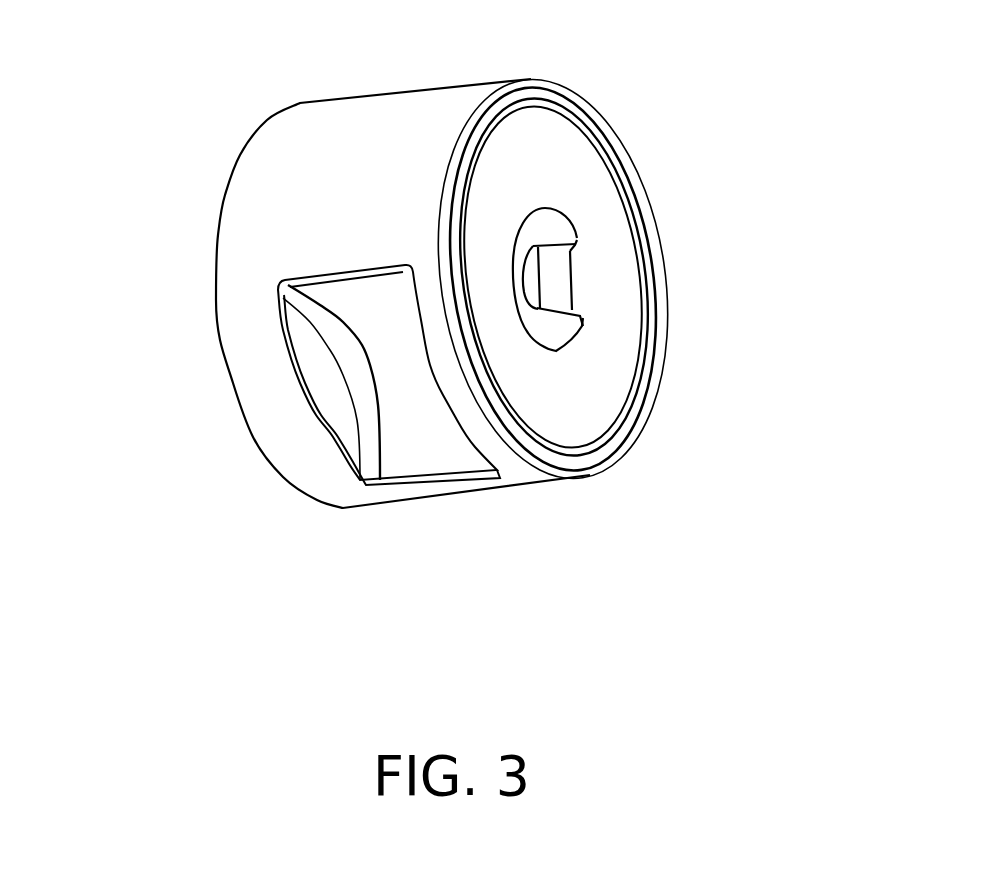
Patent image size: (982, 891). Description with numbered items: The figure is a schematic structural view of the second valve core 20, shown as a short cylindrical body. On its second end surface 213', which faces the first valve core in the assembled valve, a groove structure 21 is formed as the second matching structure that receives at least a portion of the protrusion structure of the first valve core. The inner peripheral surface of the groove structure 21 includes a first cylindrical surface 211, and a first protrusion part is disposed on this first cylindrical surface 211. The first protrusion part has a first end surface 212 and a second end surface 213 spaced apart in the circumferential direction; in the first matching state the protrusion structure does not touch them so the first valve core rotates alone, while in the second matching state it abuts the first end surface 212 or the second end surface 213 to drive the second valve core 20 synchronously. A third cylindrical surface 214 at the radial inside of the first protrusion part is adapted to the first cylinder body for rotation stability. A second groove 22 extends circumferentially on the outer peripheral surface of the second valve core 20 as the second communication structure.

The second valve core 20 is at (668, 37).
The groove structure 21 is at (690, 268).
The first cylindrical surface 211 is at (549, 227).
The first end surface 212 is at (576, 244).
The second end surface 213 is at (652, 362).
The second end surface 213' is at (595, 196).
The third cylindrical surface 214 is at (560, 279).
The second groove 22 is at (327, 420).